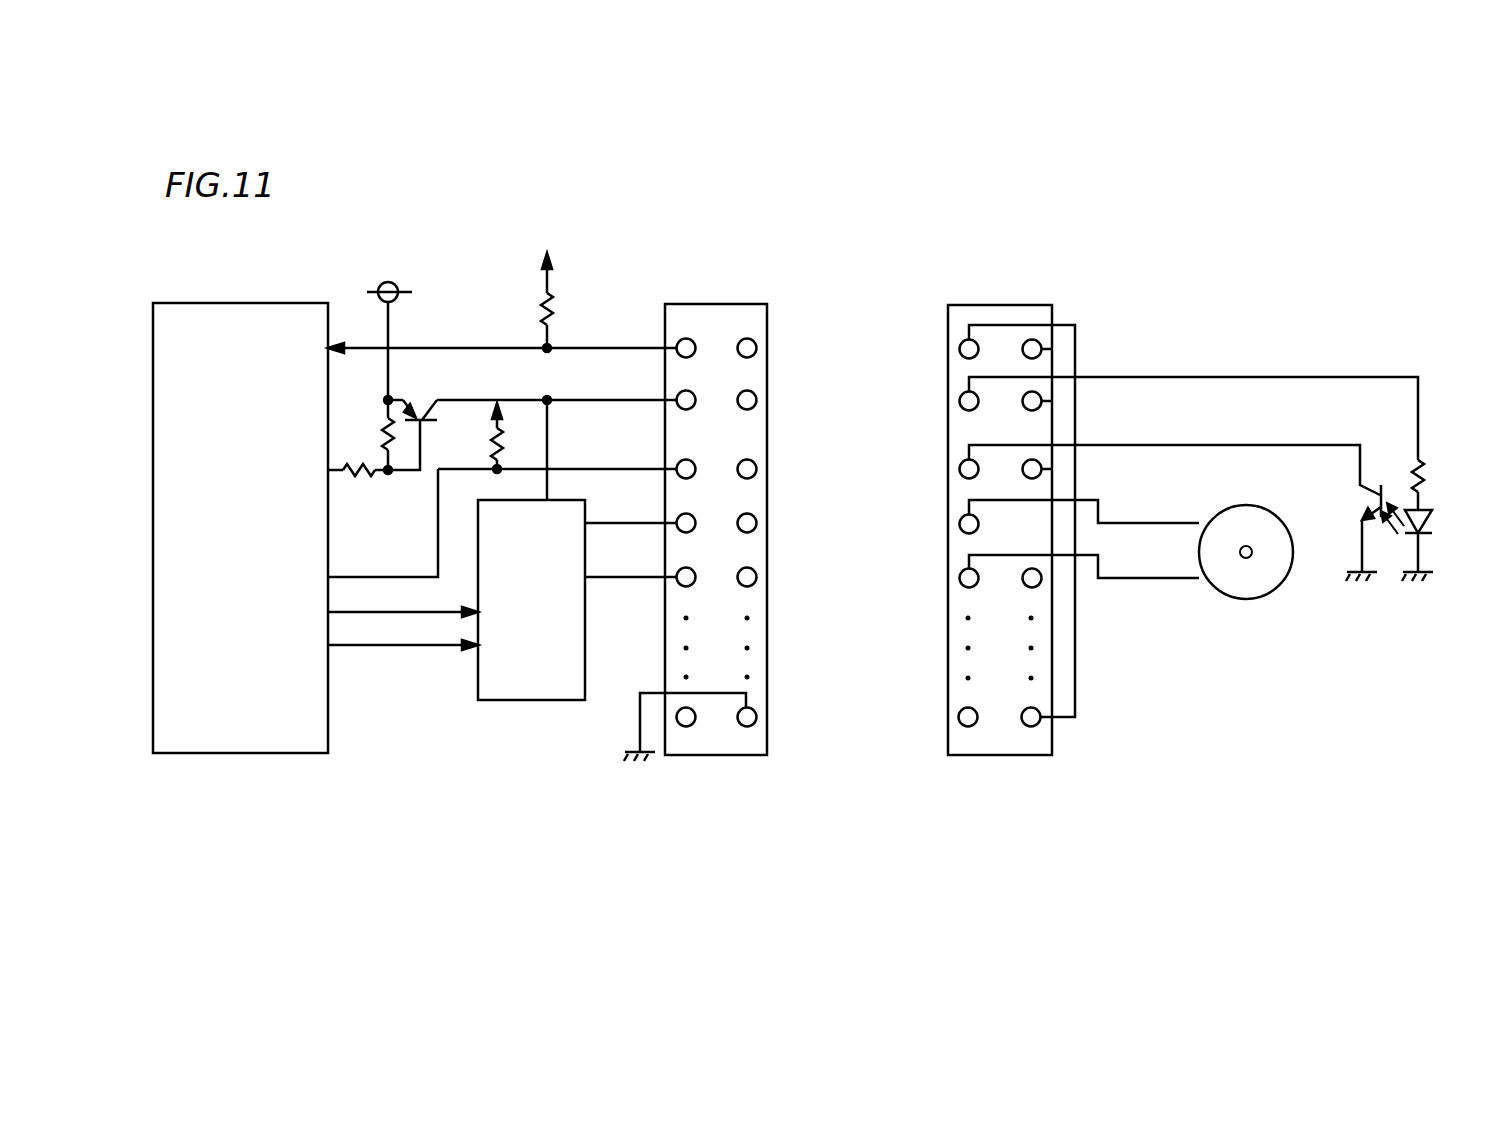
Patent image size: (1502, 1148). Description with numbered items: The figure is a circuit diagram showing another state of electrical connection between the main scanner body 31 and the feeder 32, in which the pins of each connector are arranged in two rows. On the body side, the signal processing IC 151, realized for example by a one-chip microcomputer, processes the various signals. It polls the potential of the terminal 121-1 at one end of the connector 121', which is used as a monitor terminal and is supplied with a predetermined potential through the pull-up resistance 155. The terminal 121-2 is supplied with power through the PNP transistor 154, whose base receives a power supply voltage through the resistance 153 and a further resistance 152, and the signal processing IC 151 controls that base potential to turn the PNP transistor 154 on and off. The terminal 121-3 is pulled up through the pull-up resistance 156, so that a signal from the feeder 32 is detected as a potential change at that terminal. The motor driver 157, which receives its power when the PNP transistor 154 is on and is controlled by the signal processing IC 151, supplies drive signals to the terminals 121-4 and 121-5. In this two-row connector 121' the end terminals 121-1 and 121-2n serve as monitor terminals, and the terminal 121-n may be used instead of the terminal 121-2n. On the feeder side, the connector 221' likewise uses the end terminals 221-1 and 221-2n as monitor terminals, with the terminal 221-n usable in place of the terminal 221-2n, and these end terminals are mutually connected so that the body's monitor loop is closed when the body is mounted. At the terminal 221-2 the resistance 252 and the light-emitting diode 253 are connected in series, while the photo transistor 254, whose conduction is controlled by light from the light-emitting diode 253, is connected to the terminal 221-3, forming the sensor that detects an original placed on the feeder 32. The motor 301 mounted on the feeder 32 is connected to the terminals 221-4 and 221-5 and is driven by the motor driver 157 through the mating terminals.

The signal processing IC 151 is at (272, 302).
The resistor 152 is at (362, 477).
The resistance 153 is at (382, 433).
The PNP transistor 154 is at (422, 410).
The pull-up resistance 155 is at (553, 292).
The pull-up resistance 156 is at (490, 442).
The motor driver 157 is at (478, 686).
The connector 121' is at (757, 529).
The terminal 121-1 is at (679, 341).
The terminal 121-2 is at (679, 393).
The terminal 121-3 is at (679, 462).
The terminal 121-4 is at (679, 516).
The terminal 121-5 is at (679, 570).
The terminal 121-n is at (686, 727).
The terminal 121-2n is at (747, 727).
The connector 221' is at (1040, 530).
The terminal 221-1 is at (959, 349).
The terminal 221-2 is at (959, 401).
The terminal 221-3 is at (959, 469).
The terminal 221-4 is at (959, 524).
The terminal 221-5 is at (959, 578).
The terminal 221-n is at (968, 727).
The terminal 221-2n is at (1031, 727).
The resistance 252 is at (1426, 477).
The light-emitting diode 253 is at (1433, 528).
The photo transistor 254 is at (1362, 503).
The motor 301 is at (1246, 600).
The main scanner body 31 is at (457, 740).
The feeder 32 is at (1316, 677).